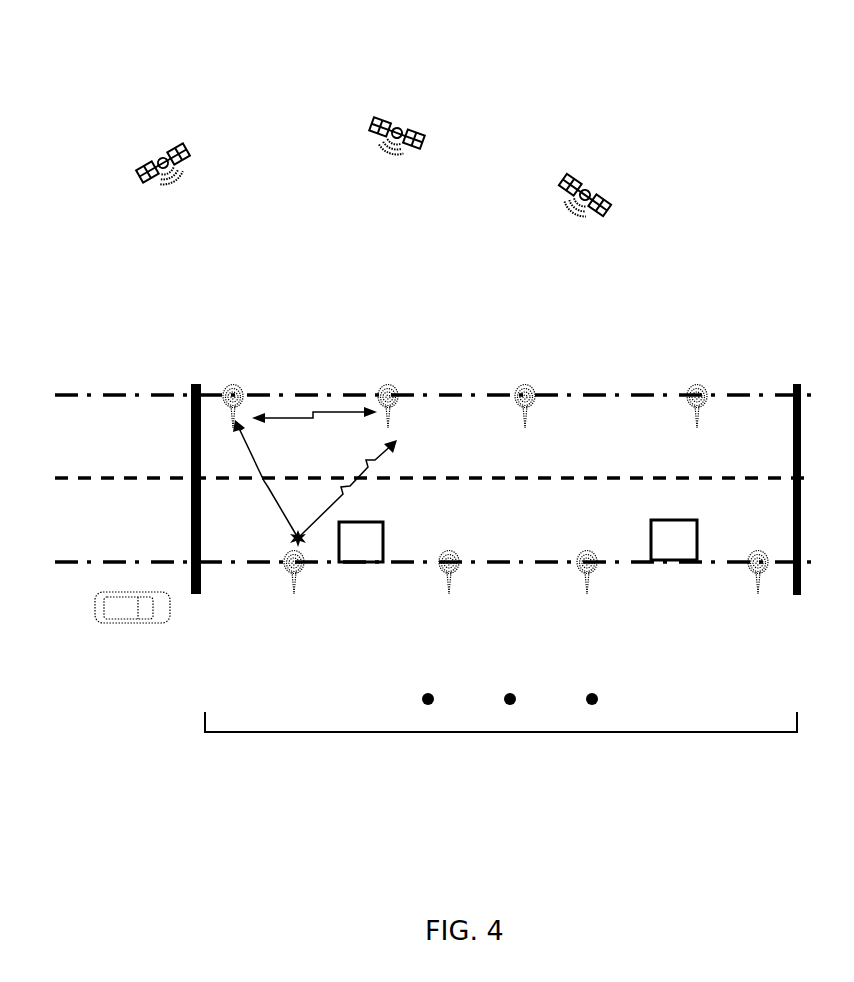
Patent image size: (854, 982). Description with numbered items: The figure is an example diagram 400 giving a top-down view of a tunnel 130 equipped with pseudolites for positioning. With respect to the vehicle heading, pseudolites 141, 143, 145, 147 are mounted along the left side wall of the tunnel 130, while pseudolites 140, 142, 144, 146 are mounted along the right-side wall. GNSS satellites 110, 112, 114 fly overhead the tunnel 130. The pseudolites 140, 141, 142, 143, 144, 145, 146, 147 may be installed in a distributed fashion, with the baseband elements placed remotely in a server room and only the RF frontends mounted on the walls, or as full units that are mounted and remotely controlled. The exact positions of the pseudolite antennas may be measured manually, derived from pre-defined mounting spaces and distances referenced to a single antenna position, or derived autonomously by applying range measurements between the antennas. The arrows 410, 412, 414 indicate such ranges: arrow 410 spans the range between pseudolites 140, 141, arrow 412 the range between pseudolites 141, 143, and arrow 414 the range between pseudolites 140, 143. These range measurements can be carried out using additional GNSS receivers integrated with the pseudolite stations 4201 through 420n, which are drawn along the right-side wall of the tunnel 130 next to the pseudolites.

The diagram 400 is at (698, 52).
The GNSS satellite 110 is at (138, 152).
The GNSS satellite 112 is at (368, 142).
The GNSS satellite 114 is at (555, 188).
The tunnel 130 is at (502, 732).
The pseudolite 140 is at (281, 575).
The pseudolite 141 is at (237, 372).
The pseudolite 142 is at (440, 577).
The pseudolite 143 is at (390, 375).
The pseudolite 144 is at (578, 577).
The pseudolite 145 is at (528, 375).
The pseudolite 146 is at (748, 577).
The pseudolite 147 is at (692, 375).
The arrow 410 is at (255, 463).
The arrow 412 is at (330, 405).
The arrow 414 is at (367, 463).
The pseudolite station 4201 is at (358, 570).
The pseudolite station 420n is at (680, 565).